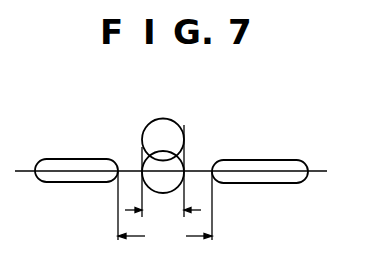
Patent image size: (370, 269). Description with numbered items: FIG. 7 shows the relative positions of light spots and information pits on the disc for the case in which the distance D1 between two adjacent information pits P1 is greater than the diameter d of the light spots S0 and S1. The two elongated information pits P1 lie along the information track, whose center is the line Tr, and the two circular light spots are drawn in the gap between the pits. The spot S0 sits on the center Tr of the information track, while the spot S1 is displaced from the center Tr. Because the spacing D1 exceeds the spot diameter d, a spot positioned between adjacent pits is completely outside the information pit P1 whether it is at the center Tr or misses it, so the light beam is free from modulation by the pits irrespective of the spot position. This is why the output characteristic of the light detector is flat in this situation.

The center of the information track Tr is at (180, 175).
The information pit P1 is at (77, 158).
The light spot S1 is at (184, 128).
The light spot S0 is at (184, 158).
The diameter of the light spots d is at (163, 173).
The distance between two adjacent information pits D1 is at (165, 209).